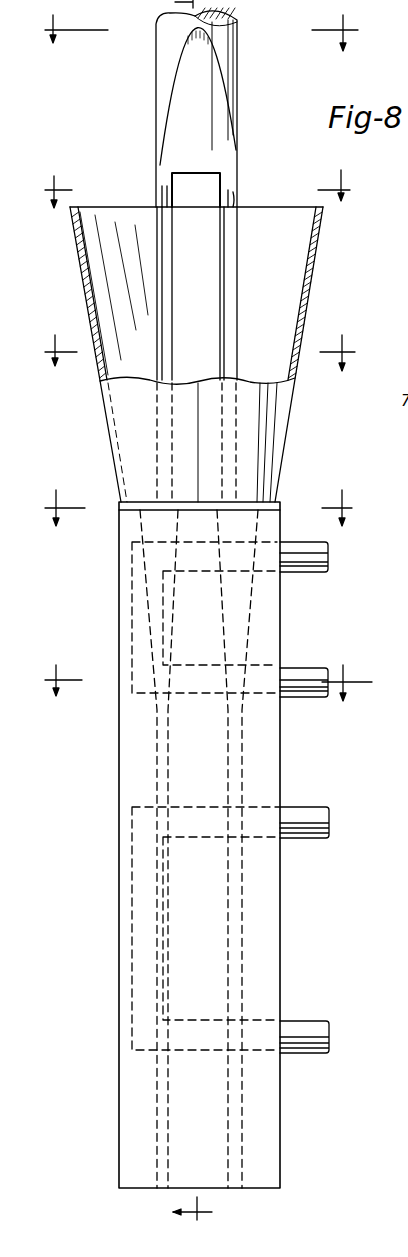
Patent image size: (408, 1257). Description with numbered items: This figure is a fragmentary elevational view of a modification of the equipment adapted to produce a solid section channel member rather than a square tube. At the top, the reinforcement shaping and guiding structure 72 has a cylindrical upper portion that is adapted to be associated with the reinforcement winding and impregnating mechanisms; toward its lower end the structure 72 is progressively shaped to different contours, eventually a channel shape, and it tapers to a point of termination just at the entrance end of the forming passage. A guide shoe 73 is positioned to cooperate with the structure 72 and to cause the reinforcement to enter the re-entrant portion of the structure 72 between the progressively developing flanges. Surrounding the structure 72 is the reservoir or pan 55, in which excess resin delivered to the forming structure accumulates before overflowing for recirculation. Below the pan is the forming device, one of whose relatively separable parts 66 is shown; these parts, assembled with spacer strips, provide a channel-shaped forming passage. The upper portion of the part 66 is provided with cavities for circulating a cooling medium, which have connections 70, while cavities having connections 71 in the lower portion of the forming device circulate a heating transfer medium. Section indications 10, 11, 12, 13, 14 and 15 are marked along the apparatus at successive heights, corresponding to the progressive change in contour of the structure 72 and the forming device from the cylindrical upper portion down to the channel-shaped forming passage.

The section line 10- 10 is at (197, 616).
The section line 11- 11 is at (201, 32).
The section line 12- 12 is at (200, 189).
The section line 13- 13 is at (200, 353).
The section line 14- 14 is at (200, 508).
The section line 15- 15 is at (203, 682).
The reservoir or pan 55 is at (306, 302).
The forming device part 66 is at (128, 908).
The cooling medium connections 70 is at (306, 668).
The heating transfer medium connections 71 is at (309, 807).
The reinforcement shaping and guiding structure 72 is at (237, 43).
The guide shoe 73 is at (187, 201).